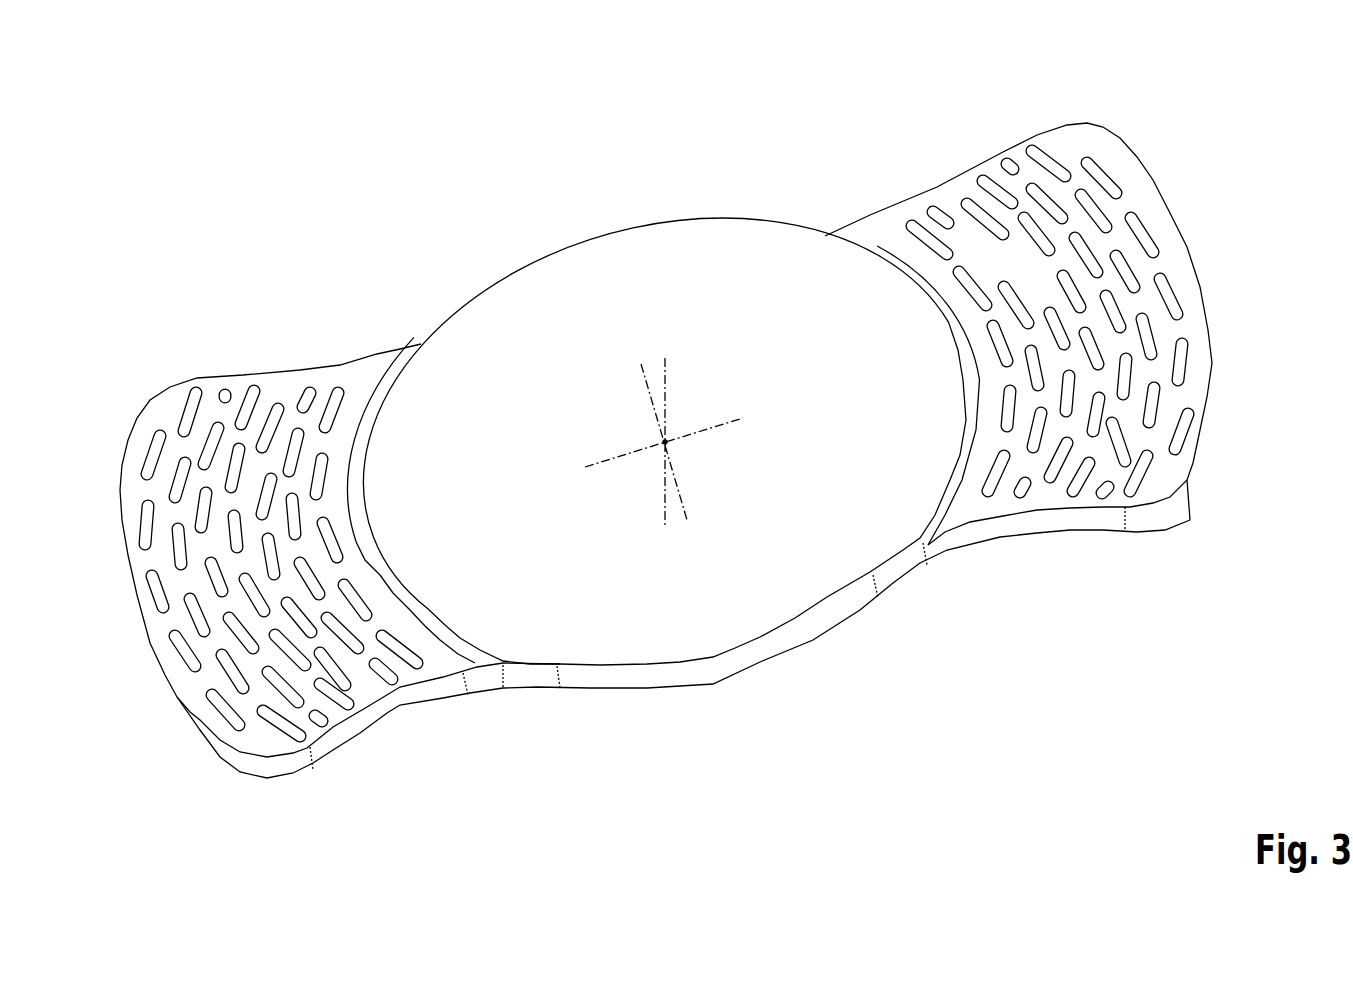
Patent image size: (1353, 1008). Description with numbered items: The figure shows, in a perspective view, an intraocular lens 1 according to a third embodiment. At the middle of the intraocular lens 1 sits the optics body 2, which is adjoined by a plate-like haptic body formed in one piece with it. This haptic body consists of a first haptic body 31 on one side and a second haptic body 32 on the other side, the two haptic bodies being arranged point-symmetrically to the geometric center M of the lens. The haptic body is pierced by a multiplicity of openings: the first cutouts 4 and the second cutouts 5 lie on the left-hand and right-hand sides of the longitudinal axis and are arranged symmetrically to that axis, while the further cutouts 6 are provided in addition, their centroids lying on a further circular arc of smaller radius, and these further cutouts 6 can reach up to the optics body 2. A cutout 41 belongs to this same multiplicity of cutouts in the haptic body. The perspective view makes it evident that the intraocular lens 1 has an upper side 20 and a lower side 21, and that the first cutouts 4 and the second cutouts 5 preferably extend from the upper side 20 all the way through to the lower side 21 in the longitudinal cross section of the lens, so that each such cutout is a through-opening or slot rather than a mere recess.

The intraocular lens 1 is at (657, 142).
The optics body 2 is at (560, 292).
The upper side 20 is at (440, 668).
The lower side 21 is at (815, 537).
The first haptic body 31 is at (1043, 538).
The second haptic body 32 is at (420, 722).
The first cutout 4 is at (1090, 155).
The cutout 41 is at (1176, 291).
The second cutout 5 is at (1043, 150).
The further cutouts 6 is at (913, 220).
The geometric center M is at (665, 442).